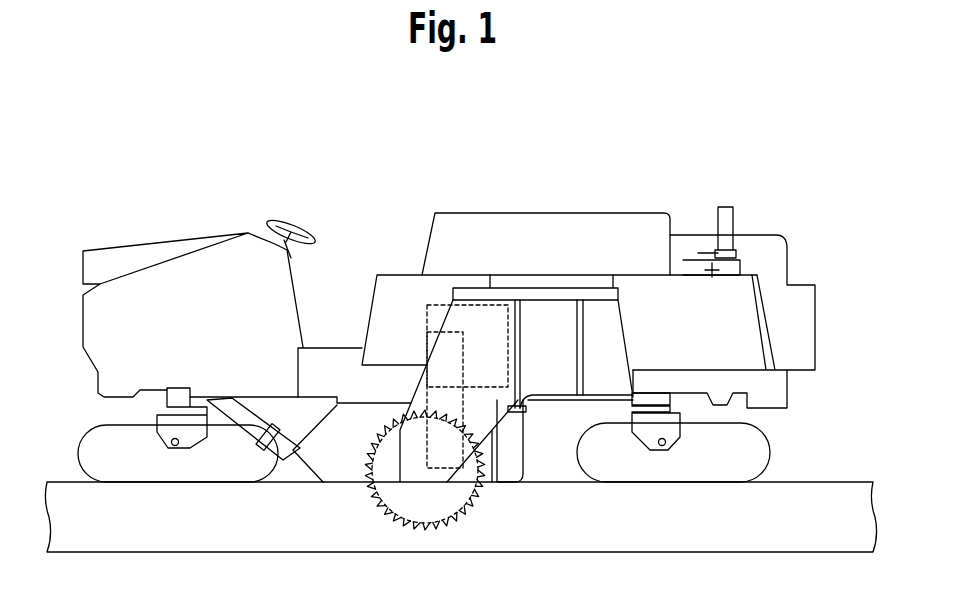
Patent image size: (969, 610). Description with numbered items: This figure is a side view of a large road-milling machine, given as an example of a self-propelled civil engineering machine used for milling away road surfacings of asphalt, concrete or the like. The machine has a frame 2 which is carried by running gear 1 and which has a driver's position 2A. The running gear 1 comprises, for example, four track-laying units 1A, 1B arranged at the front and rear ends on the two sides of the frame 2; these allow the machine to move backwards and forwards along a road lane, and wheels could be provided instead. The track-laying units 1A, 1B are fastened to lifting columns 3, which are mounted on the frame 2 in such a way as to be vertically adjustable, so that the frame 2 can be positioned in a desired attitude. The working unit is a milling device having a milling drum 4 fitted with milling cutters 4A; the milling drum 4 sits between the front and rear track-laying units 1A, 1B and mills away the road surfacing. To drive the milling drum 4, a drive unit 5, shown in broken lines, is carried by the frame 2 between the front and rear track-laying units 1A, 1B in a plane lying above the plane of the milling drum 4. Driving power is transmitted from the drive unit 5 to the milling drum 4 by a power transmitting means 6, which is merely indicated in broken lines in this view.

The running gear 1 is at (95, 413).
The front track-laying unit 1A is at (93, 455).
The rear track-laying unit 1B is at (755, 452).
The frame 2 is at (406, 202).
The driver's position 2A is at (256, 215).
The lifting columns 3 is at (178, 388).
The milling drum 4 is at (442, 513).
The milling cutters 4A is at (407, 527).
The drive unit 5 is at (427, 322).
The power transmitting means 6 is at (447, 403).